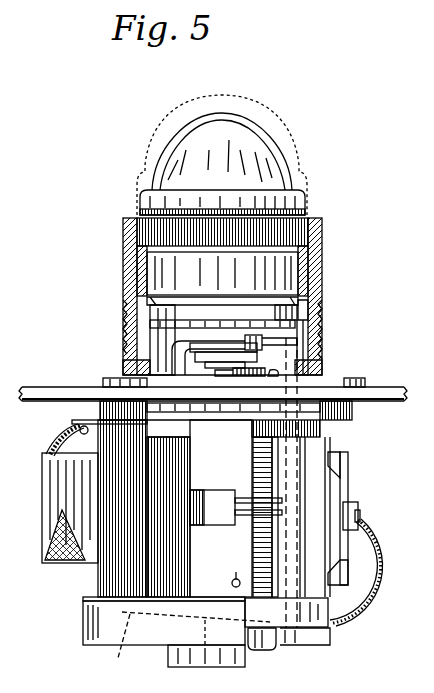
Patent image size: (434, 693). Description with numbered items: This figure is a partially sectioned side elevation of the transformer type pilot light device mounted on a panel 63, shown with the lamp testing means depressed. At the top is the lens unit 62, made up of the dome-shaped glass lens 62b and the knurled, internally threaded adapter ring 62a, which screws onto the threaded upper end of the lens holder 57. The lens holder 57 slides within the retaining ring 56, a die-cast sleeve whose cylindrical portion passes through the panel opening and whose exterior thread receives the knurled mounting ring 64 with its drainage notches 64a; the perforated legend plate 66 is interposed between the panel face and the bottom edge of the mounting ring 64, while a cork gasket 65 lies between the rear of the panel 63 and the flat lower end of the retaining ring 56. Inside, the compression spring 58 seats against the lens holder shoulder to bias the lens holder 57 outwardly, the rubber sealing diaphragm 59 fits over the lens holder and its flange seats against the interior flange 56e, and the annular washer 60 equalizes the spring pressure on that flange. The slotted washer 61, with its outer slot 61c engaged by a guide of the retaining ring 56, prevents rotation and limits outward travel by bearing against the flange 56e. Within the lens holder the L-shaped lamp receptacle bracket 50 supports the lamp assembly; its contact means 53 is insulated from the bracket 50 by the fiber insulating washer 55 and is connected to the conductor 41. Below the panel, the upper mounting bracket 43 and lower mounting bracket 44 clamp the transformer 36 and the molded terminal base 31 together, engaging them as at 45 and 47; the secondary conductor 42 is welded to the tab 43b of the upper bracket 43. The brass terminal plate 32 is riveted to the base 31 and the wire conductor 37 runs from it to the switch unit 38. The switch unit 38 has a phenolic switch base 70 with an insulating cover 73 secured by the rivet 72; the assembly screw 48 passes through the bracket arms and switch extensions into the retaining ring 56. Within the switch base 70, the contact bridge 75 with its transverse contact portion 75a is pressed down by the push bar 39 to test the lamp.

The lens unit 62 is at (266, 132).
The dome-shaped glass lens 62b is at (270, 153).
The adapter ring 62a is at (301, 206).
The mounting ring 64 is at (323, 240).
The retaining ring 56 is at (305, 272).
The lens holder 57 is at (305, 288).
The continuous flange 56e is at (322, 312).
The compression spring 58 is at (155, 291).
The annular washer 60 is at (150, 306).
The sealing diaphragm 59 is at (160, 323).
The outer slot 61c is at (150, 334).
The slotted washer 61 is at (150, 348).
The lamp receptacle bracket 50 is at (282, 347).
The fiber insulating washer 55 is at (282, 354).
The conductor 41 is at (300, 372).
The drainage openings 64a is at (128, 363).
The contact means 53 is at (140, 378).
The legend plate 66 is at (366, 383).
The panel 63 is at (53, 387).
The gasket 65 is at (275, 410).
The tab 43b is at (75, 428).
The secondary conductor 42 is at (50, 450).
The transformer 36 is at (50, 490).
The clamping engagement 45 is at (209, 508).
The upper mounting bracket 43 is at (236, 493).
The lower mounting bracket 44 is at (255, 483).
The clamping engagement 47 is at (232, 581).
The push bar 39 is at (290, 462).
The terminal base 31 is at (349, 463).
The terminal plate 32 is at (360, 518).
The wire conductor 37 is at (370, 602).
The insulating cover 73 is at (85, 599).
The switch base 70 is at (100, 622).
The switch unit 38 is at (143, 652).
The contact bridge 75 is at (115, 656).
The contact portion 75a is at (206, 668).
The assembly screw 48 is at (281, 650).
The rivet 72 is at (330, 633).